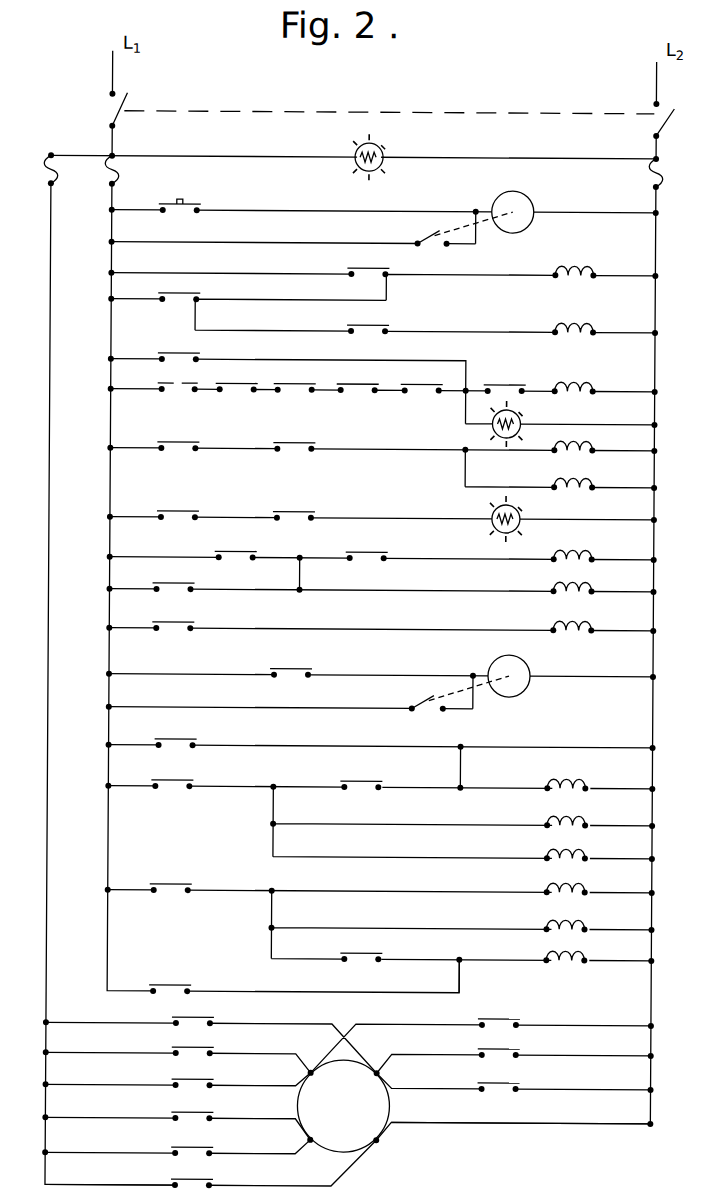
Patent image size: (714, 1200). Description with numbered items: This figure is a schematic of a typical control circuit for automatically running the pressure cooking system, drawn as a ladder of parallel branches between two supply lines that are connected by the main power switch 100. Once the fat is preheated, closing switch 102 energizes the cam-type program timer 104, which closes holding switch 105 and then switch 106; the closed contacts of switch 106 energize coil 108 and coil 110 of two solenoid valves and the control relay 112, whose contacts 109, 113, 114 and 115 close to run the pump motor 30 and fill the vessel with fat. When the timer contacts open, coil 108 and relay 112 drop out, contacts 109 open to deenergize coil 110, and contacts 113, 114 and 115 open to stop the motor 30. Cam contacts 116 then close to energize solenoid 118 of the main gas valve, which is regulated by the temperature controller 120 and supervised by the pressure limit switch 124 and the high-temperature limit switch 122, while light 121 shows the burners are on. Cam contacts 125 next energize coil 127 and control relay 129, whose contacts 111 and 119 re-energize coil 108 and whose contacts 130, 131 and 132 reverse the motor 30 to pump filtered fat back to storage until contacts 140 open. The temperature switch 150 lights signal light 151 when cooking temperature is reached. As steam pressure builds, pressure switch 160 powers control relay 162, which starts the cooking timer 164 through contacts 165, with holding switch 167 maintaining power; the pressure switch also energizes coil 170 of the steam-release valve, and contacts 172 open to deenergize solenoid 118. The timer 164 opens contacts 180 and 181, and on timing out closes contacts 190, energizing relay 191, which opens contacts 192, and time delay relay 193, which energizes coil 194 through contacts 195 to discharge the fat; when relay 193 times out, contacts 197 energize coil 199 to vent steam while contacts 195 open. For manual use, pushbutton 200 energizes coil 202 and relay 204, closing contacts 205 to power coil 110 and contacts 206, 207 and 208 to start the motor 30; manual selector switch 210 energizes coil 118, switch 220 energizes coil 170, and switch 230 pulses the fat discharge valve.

The pump motor 30 is at (362, 1114).
The main power switch 100 is at (128, 100).
The switch 102 is at (196, 203).
The timer 104 is at (530, 200).
The holding switch 105 is at (430, 240).
The switch 106 is at (196, 292).
The coil 108 is at (570, 264).
The contact 109 is at (172, 984).
The coil 110 is at (587, 952).
The contact 111 is at (350, 270).
The control relay 112 is at (577, 322).
The contact 113 is at (210, 1016).
The contact 114 is at (178, 1176).
The contact 115 is at (512, 1016).
The cam contacts 116 is at (158, 384).
The solenoid 118 is at (577, 380).
The contact 119 is at (386, 323).
The temperature controller 120 is at (300, 390).
The light 121 is at (522, 416).
The high-temperature limit switch 122 is at (356, 382).
The pressure limit switch 124 is at (232, 373).
The cam contacts 125 is at (174, 435).
The coil 127 is at (590, 446).
The control relay 129 is at (590, 483).
The contact 130 is at (178, 1046).
The contact 131 is at (176, 1144).
The contact 132 is at (512, 1046).
The contacts 140 is at (282, 444).
The temperature switch 150 is at (174, 504).
The signal light 151 is at (482, 514).
The pressure switch 160 is at (222, 552).
The control relay 162 is at (590, 554).
The cooking timer 164 is at (529, 665).
The contacts 165 is at (312, 667).
The holding switch 167 is at (432, 708).
The coil 170 is at (560, 590).
The contacts 172 is at (520, 362).
The contacts 180 is at (305, 510).
The contacts 181 is at (384, 550).
The contacts 190 is at (190, 779).
The relay 191 is at (587, 851).
The contacts 192 is at (422, 392).
The time delay relay 193 is at (587, 818).
The coil 194 is at (582, 780).
The contacts 195 is at (368, 779).
The contacts 197 is at (192, 621).
The coil 199 is at (590, 625).
The pushbutton 200 is at (184, 883).
The coil 202 is at (587, 884).
The relay 204 is at (587, 921).
The contacts 205 is at (375, 951).
The contact 206 is at (178, 1078).
The contact 207 is at (180, 1110).
The contact 208 is at (512, 1080).
The manual selector switch 210 is at (171, 350).
The switch 220 is at (192, 582).
The switch 230 is at (188, 738).